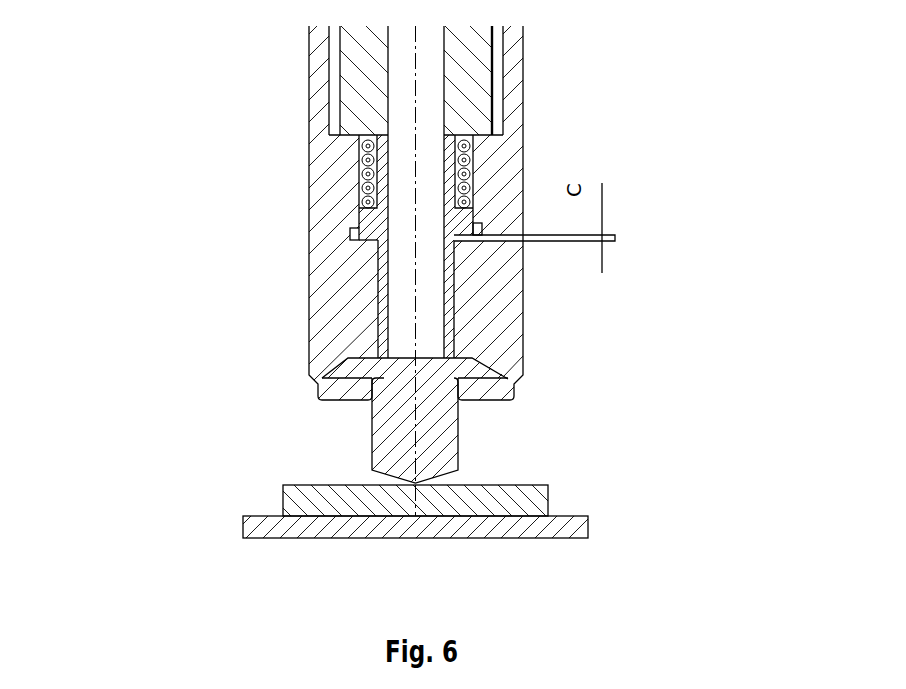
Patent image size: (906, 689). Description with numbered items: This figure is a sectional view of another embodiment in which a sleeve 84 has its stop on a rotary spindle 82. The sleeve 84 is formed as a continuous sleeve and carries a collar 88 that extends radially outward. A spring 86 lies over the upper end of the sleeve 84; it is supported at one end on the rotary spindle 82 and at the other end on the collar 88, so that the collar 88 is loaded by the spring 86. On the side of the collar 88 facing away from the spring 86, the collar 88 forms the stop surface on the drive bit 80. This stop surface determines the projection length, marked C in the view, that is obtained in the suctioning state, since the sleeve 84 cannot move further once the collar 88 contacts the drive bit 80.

The drive bit 80 is at (328, 175).
The rotary spindle 82 is at (355, 83).
The sleeve 84 is at (378, 303).
The spring 86 is at (470, 157).
The collar 88 is at (355, 243).